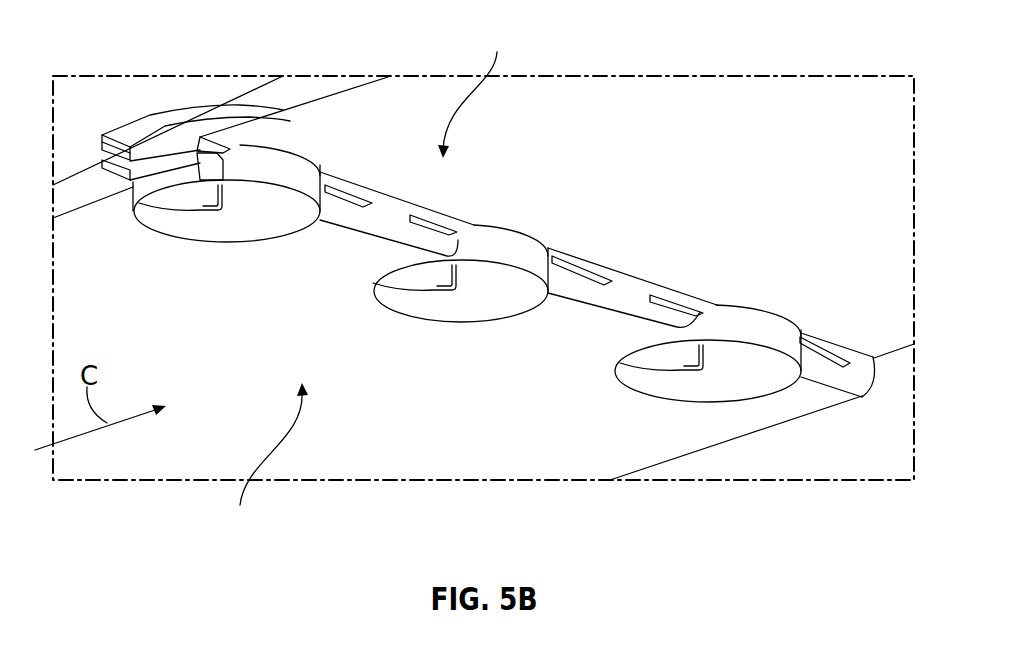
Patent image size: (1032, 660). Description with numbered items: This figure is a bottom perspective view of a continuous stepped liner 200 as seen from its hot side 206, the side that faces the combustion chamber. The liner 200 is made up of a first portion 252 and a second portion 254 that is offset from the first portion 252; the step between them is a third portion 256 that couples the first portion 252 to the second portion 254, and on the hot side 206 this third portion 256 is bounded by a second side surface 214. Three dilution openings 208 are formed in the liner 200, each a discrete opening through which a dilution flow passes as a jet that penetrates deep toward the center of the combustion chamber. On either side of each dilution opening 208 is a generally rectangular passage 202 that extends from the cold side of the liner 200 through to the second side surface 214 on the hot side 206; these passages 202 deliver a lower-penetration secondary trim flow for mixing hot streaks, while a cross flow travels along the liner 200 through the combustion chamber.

The liner 200 is at (133, 60).
The passage 202 is at (680, 293).
The hot side 206 is at (398, 436).
The dilution opening 208 is at (210, 207).
The second side surface 214 is at (610, 318).
The first portion 252 is at (263, 462).
The second portion 254 is at (478, 89).
The third portion 256 is at (870, 372).